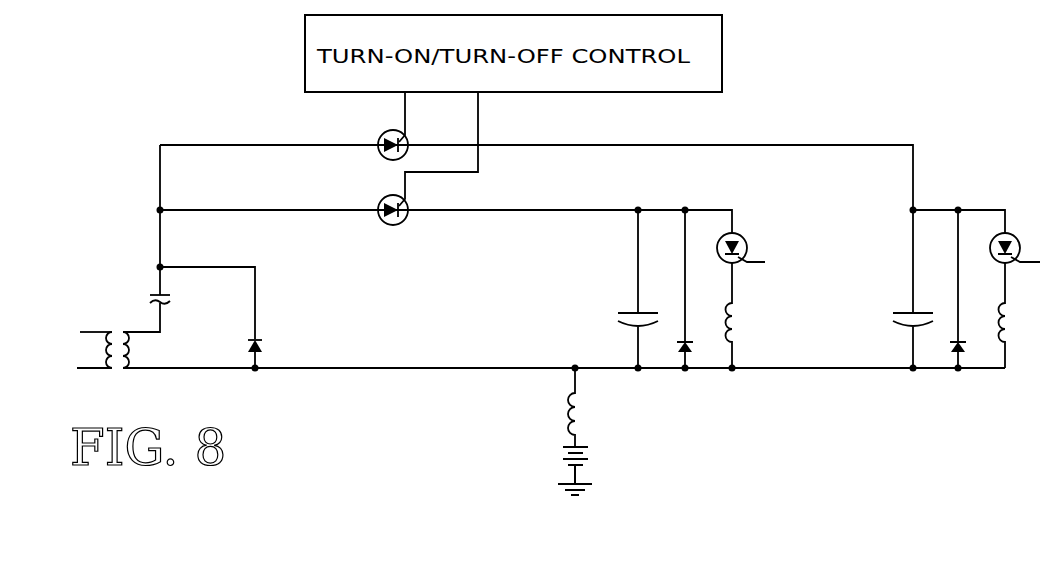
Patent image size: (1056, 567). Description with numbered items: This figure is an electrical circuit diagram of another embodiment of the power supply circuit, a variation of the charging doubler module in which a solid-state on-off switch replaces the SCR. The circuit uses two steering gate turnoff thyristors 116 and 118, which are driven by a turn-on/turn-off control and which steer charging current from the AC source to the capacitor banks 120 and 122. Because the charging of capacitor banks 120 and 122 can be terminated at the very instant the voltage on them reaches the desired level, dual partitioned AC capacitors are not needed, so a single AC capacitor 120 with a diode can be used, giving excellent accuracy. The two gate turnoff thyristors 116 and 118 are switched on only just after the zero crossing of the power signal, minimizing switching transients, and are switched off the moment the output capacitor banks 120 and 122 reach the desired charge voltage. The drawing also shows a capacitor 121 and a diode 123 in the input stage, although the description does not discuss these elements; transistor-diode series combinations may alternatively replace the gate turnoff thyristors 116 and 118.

The gate turnoff thyristor 116 is at (380, 133).
The gate turnoff thyristor 118 is at (379, 199).
The capacitor bank 120 is at (632, 312).
The capacitor 121 is at (166, 300).
The capacitor bank 122 is at (907, 312).
The diode 123 is at (263, 345).